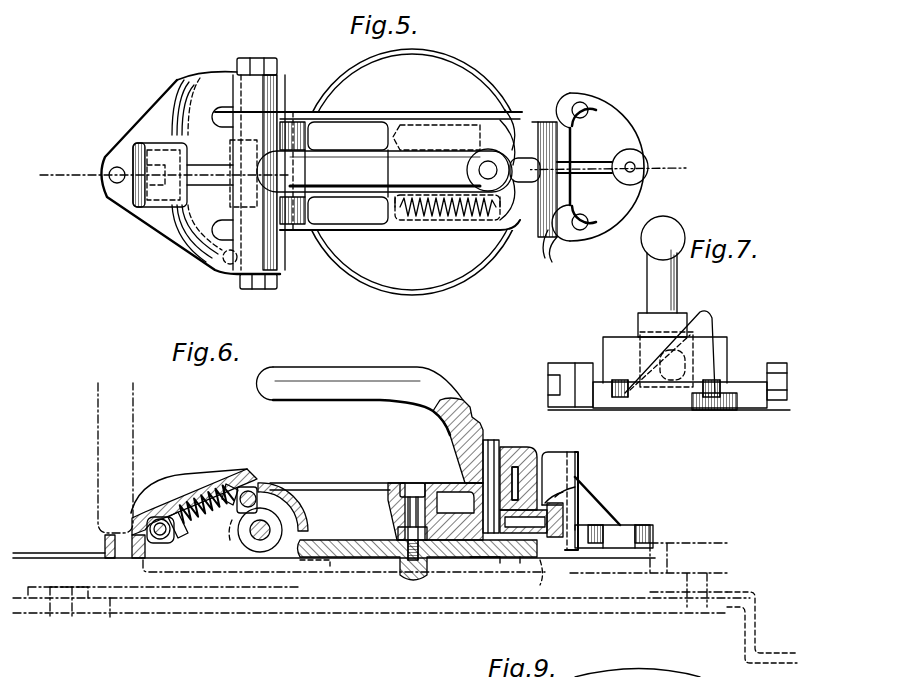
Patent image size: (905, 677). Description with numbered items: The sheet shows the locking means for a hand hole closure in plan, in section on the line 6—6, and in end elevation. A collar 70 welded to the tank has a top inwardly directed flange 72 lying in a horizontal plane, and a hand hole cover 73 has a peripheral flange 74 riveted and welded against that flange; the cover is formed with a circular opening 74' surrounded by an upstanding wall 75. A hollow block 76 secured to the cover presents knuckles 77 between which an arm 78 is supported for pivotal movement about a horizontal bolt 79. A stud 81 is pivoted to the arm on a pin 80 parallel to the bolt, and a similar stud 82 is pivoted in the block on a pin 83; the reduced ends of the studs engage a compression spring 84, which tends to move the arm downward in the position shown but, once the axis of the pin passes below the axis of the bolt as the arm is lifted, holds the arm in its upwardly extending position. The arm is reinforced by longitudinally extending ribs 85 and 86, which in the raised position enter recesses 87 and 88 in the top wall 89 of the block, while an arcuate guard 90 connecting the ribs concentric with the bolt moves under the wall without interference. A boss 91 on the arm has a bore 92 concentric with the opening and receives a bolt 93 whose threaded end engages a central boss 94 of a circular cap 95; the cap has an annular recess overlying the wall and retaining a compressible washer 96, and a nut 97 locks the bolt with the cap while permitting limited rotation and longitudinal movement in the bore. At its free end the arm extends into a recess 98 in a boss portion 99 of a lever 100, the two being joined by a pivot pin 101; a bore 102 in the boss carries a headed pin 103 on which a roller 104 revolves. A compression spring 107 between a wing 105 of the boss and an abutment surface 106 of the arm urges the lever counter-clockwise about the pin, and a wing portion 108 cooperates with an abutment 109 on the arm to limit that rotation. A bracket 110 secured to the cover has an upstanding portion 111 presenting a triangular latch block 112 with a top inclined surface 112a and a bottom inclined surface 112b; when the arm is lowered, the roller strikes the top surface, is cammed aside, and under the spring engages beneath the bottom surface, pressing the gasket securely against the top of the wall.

In FIG. 5, the section line 6— 6 is at (359, 172).
In FIG. 6, the collar 70 is at (765, 635).
In FIG. 6, the top inwardly directed flange 72 is at (674, 607).
In FIG. 6, the hand hole cover 73 is at (107, 577).
In FIG. 6, the peripheral flange 74 is at (334, 585).
In FIG. 6, the circular opening 74' is at (457, 601).
In FIG. 6, the upstanding wall 75 is at (510, 560).
In FIG. 5, the hollow block 76 is at (190, 232).
In FIG. 6, the hollow block 76 is at (103, 540).
In FIG. 5, the knuckles 77 is at (283, 82).
In FIG. 5, the arm 78 is at (368, 112).
In FIG. 6, the arm 78 is at (345, 483).
In FIG. 5, the horizontal bolt 79 is at (258, 285).
In FIG. 6, the horizontal bolt 79 is at (270, 522).
In FIG. 6, the pin 80 is at (254, 492).
In FIG. 6, the stud 81 is at (247, 480).
In FIG. 6, the stud 82 is at (175, 545).
In FIG. 6, the pin 83 is at (160, 518).
In FIG. 6, the compression spring 84 is at (227, 545).
In FIG. 5, the longitudinally extending rib 85 is at (330, 112).
In FIG. 6, the longitudinally extending rib 85 is at (365, 488).
In FIG. 5, the longitudinally extending rib 86 is at (380, 230).
In FIG. 5, the recess 87 is at (232, 75).
In FIG. 5, the recess 88 is at (220, 232).
In FIG. 5, the top wall 89 is at (195, 130).
In FIG. 6, the top wall 89 is at (184, 473).
In FIG. 6, the arcuate guard 90 is at (287, 500).
In FIG. 6, the boss 91 is at (395, 487).
In FIG. 6, the bore 92 is at (427, 487).
In FIG. 6, the bolt 93 is at (407, 513).
In FIG. 6, the central boss 94 is at (395, 563).
In FIG. 6, the circular cap 95 is at (470, 560).
In FIG. 6, the compressible washer 96 is at (332, 560).
In FIG. 6, the nut 97 is at (428, 534).
In FIG. 6, the recess 98 is at (515, 467).
In FIG. 6, the boss portion 99 is at (531, 462).
In FIG. 5, the lever 100 is at (345, 175).
In FIG. 7, the lever 100 is at (672, 218).
In FIG. 6, the lever 100 is at (98, 445).
In FIG. 5, the pivot pin 101 is at (492, 162).
In FIG. 6, the pivot pin 101 is at (487, 433).
In FIG. 6, the bore 102 is at (548, 562).
In FIG. 6, the headed pin 103 is at (573, 508).
In FIG. 6, the roller 104 is at (565, 493).
In FIG. 5, the wing 105 is at (505, 235).
In FIG. 5, the abutment surface 106 is at (415, 222).
In FIG. 5, the compression spring 107 is at (460, 222).
In FIG. 5, the wing portion 108 is at (507, 112).
In FIG. 5, the abutment 109 is at (478, 125).
In FIG. 5, the bracket 110 is at (620, 136).
In FIG. 7, the bracket 110 is at (672, 405).
In FIG. 6, the bracket 110 is at (623, 527).
In FIG. 5, the upstanding portion 111 is at (585, 115).
In FIG. 7, the upstanding portion 111 is at (712, 340).
In FIG. 6, the upstanding portion 111 is at (574, 452).
In FIG. 5, the latch block 112 is at (553, 122).
In FIG. 7, the latch block 112 is at (708, 327).
In FIG. 6, the latch block 112 is at (563, 450).
In FIG. 5, the top inclined surface 112a is at (548, 236).
In FIG. 7, the top inclined surface 112a is at (700, 312).
In FIG. 6, the top inclined surface 112a is at (553, 472).
In FIG. 7, the bottom inclined surface 112b is at (718, 370).